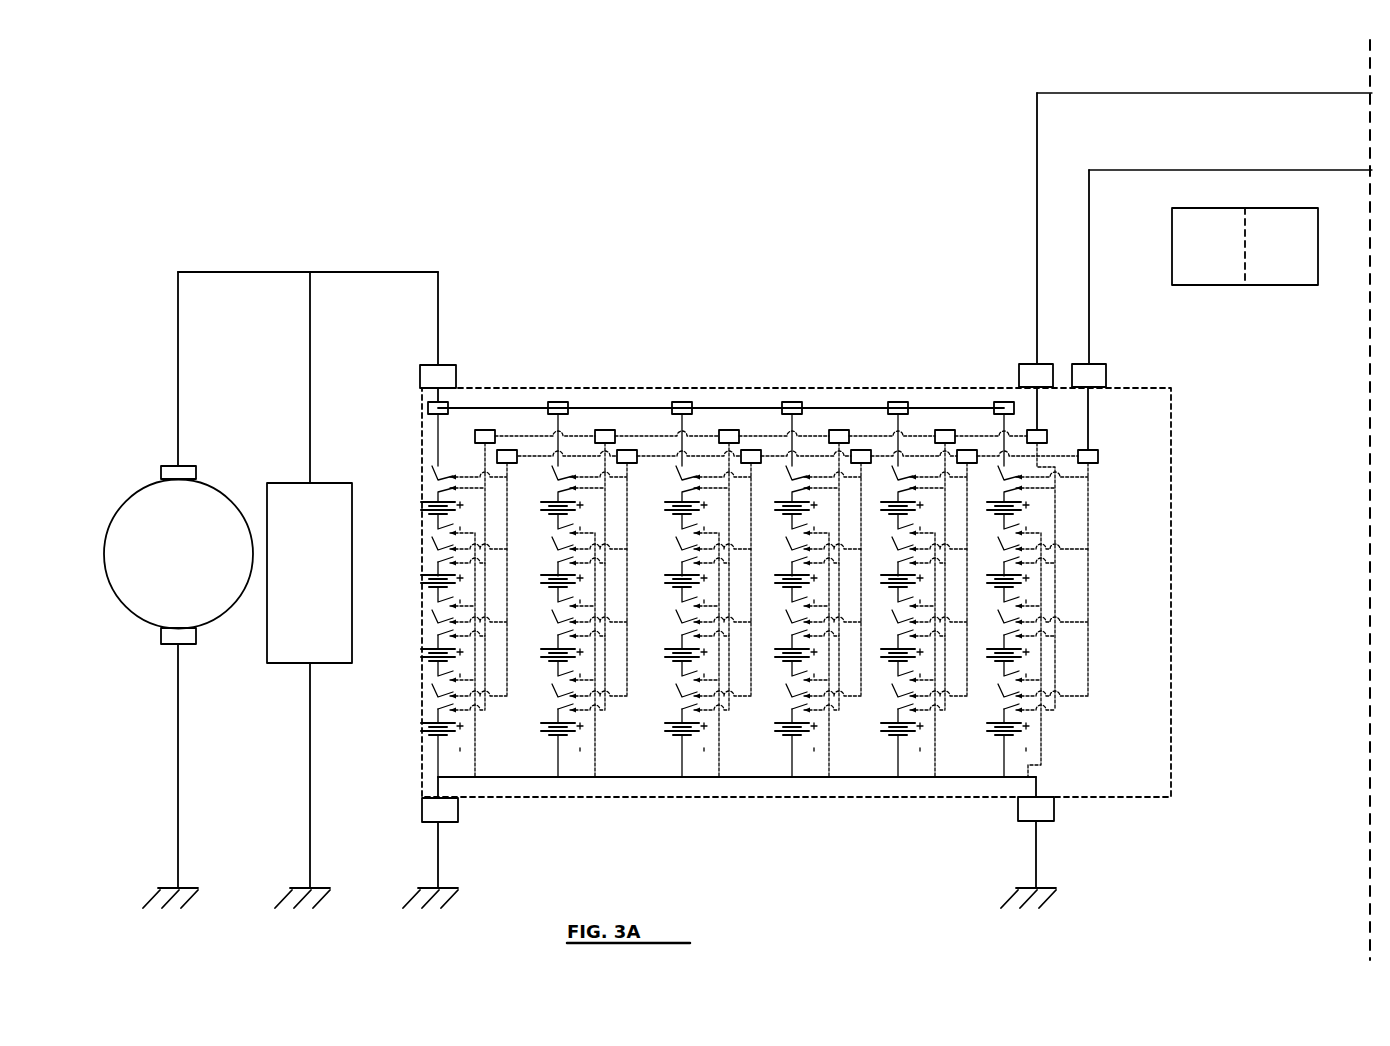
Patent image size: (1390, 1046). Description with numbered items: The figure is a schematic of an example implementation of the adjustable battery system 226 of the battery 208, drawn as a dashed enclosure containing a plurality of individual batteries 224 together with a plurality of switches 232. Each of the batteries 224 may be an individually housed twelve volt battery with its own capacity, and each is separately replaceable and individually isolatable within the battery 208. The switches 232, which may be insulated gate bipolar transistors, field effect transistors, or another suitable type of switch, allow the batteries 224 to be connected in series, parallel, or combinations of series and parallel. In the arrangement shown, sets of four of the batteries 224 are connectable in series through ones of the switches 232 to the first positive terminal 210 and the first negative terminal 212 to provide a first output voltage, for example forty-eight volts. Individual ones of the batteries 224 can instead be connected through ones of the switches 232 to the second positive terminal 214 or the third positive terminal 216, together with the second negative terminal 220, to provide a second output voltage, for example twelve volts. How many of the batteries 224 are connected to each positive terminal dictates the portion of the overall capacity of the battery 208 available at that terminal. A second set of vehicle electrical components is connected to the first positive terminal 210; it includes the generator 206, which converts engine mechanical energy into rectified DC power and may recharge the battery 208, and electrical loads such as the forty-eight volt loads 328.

The generator 206 is at (123, 500).
The 48 V loads 328 is at (291, 483).
The battery 208 is at (736, 388).
The first positive terminal 210 is at (455, 364).
The first negative terminal 212 is at (458, 810).
The second positive terminal 214 is at (1032, 364).
The third positive terminal 216 is at (1100, 364).
The second negative terminal 220 is at (1054, 808).
The batteries 224 is at (416, 507).
The adjustable battery system 226 is at (1084, 729).
The switches 232 is at (419, 474).